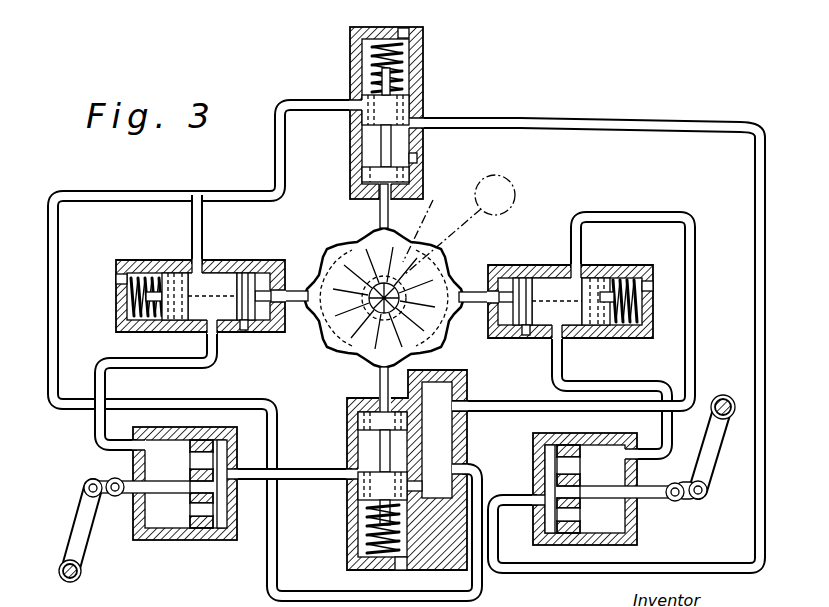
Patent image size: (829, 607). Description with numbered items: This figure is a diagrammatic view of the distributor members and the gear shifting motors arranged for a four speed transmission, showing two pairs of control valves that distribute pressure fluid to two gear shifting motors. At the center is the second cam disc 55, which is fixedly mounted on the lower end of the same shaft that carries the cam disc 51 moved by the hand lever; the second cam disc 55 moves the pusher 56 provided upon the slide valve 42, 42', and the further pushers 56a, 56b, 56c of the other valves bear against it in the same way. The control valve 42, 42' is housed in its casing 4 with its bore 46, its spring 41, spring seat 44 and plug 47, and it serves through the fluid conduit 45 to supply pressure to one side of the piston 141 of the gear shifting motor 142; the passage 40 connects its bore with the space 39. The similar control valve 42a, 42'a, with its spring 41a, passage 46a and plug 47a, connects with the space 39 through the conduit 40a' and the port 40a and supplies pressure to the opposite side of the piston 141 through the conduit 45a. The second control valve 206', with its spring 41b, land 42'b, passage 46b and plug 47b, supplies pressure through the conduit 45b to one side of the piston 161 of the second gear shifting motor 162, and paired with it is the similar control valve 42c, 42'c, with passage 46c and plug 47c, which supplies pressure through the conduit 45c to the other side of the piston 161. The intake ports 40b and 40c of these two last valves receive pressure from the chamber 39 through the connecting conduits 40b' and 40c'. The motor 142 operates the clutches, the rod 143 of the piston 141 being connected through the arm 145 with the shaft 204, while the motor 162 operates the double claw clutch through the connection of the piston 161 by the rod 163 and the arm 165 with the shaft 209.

The valve casing 4 is at (351, 566).
The space 39 is at (445, 431).
The passage 40 is at (420, 489).
The spring 41 is at (366, 532).
The slide valve 42 is at (348, 488).
The slide valve 42' is at (346, 423).
The spring seat 44 is at (378, 512).
The fluid conduit 45 is at (303, 471).
The valve bore 46 is at (350, 437).
The plug 47 is at (401, 567).
The cam disc 51 is at (352, 242).
The second cam disc 55 is at (358, 357).
The pusher 56 is at (380, 382).
The valve stem 56a is at (304, 304).
The valve stem 56b is at (389, 208).
The valve stem 56c is at (470, 304).
The port 40a is at (225, 249).
The conduit 40a' is at (171, 229).
The spring 41a is at (133, 262).
The control valve 42a is at (176, 272).
The control valve 42'a is at (285, 283).
The conduit 45a is at (219, 356).
The passage 46a is at (245, 331).
The plug 47a is at (118, 280).
The intake port 40b is at (330, 130).
The connecting conduit 40b' is at (265, 334).
The spring 41b is at (409, 62).
The second control valve 42'b is at (353, 179).
The conduit 45b is at (491, 121).
The passage 46b is at (418, 158).
The plug 47b is at (410, 32).
The valve 206' is at (350, 100).
The intake port 40c is at (552, 248).
The connecting conduit 40c' is at (570, 292).
The control valve 42c is at (632, 266).
The control valve 42'c is at (504, 286).
The conduit 45c is at (556, 372).
The passage 46c is at (535, 342).
The plug 47c is at (655, 288).
The piston 141 is at (200, 515).
The gear shifting motor 142 is at (182, 541).
The rod 143 is at (168, 479).
The arm 145 is at (78, 528).
The shaft 204 is at (60, 577).
The piston 161 is at (575, 517).
The second gear shifting motor 162 is at (586, 546).
The rod 163 is at (597, 484).
The arm 165 is at (704, 496).
The shaft 209 is at (723, 395).